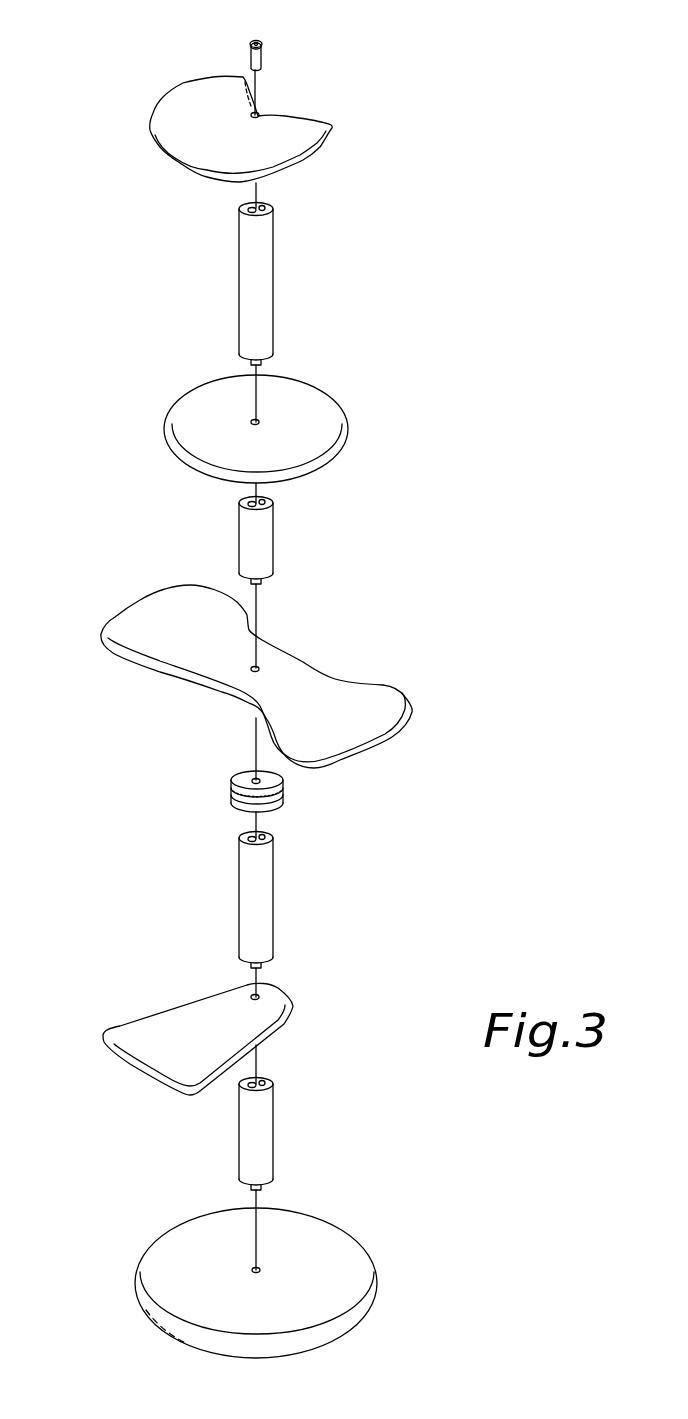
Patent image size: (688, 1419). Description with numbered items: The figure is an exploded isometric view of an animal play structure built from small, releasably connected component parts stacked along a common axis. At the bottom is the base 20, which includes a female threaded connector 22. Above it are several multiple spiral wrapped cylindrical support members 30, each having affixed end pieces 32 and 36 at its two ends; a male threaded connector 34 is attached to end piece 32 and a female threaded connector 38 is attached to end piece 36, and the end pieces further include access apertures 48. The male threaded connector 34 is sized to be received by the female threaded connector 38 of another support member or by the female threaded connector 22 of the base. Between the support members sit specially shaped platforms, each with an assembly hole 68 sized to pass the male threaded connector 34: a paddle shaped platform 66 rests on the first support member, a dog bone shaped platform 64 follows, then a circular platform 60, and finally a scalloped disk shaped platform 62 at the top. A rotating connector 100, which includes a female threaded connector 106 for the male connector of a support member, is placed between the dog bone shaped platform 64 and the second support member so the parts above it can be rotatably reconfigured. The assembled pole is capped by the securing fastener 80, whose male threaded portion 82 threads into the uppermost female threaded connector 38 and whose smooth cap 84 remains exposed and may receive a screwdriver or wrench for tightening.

The securing fastener 80 is at (295, 32).
The male threaded portion 82 is at (263, 58).
The cap 84 is at (252, 44).
The scalloped disk shaped platform 62 is at (163, 112).
The assembly hole 68 is at (259, 114).
The access aperture 48 is at (268, 205).
The multiple spiral wrapped cylindrical support member 30 is at (272, 278).
The platform 60 is at (180, 413).
The dog bone shaped platform 64 is at (115, 638).
The rotating connector 100 is at (238, 778).
The female threaded connector 106 is at (255, 779).
The paddle shaped platform 66 is at (133, 1032).
The female threaded connector 38 is at (258, 1082).
The end piece 36 is at (238, 1088).
The end piece 32 is at (270, 1184).
The male threaded connector 34 is at (253, 1190).
The base 20 is at (160, 1258).
The female threaded connector 22 is at (260, 1268).